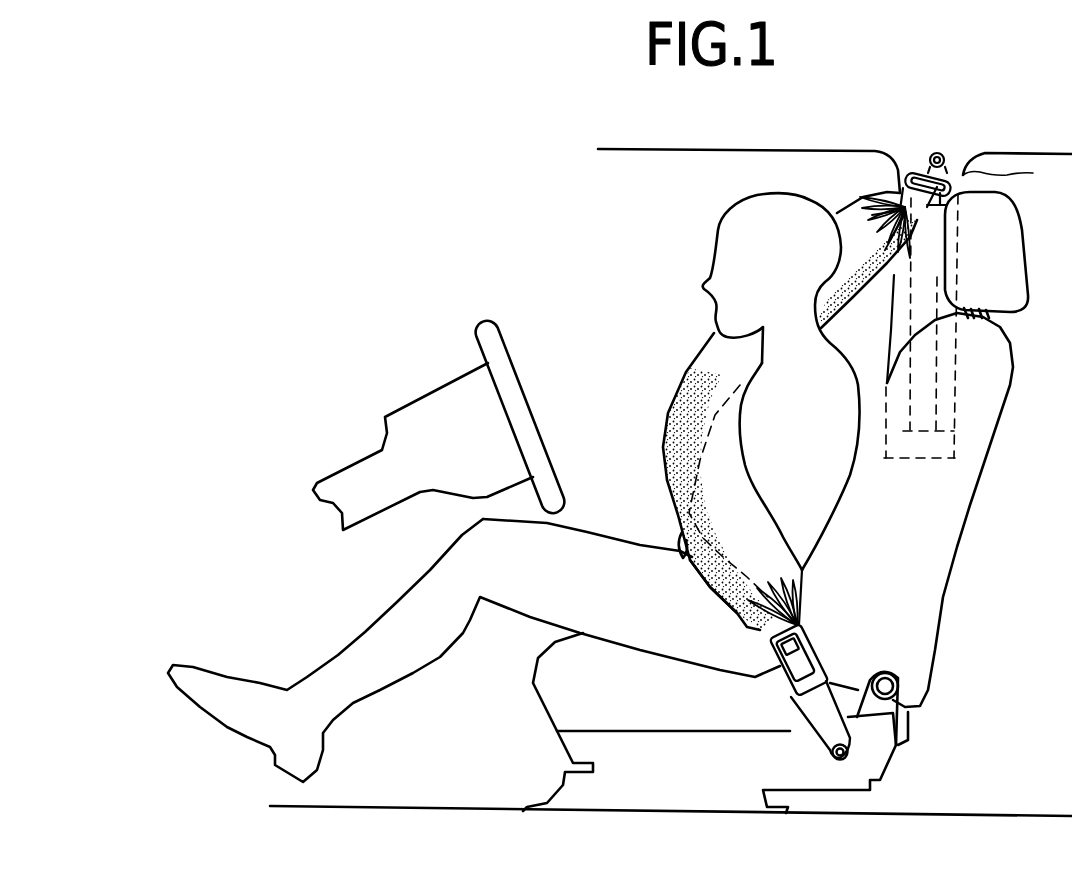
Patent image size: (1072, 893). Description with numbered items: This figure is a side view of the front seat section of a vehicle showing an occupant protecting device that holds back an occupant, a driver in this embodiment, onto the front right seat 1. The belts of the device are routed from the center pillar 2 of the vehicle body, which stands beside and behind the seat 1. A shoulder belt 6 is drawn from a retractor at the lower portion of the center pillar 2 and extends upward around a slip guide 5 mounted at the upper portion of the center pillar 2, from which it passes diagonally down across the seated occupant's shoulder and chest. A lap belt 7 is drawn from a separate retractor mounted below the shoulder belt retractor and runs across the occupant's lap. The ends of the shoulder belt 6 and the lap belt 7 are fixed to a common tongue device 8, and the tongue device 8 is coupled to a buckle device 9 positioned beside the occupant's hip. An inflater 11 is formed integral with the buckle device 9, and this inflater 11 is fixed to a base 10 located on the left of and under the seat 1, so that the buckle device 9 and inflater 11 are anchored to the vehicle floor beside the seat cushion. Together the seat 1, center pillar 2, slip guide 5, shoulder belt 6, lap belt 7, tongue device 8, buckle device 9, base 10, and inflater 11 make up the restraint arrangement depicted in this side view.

The front right seat 1 is at (966, 536).
The center pillar 2 is at (898, 310).
The slip guide 5 is at (980, 181).
The shoulder belt 6 is at (690, 340).
The lap belt 7 is at (688, 548).
The tongue device 8 is at (814, 630).
The buckle device 9 is at (832, 658).
The base 10 is at (697, 797).
The inflater 11 is at (822, 727).